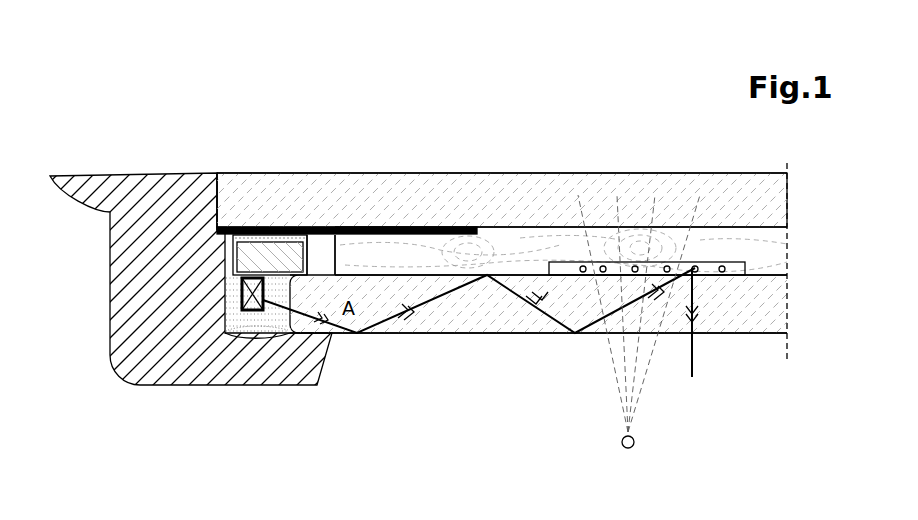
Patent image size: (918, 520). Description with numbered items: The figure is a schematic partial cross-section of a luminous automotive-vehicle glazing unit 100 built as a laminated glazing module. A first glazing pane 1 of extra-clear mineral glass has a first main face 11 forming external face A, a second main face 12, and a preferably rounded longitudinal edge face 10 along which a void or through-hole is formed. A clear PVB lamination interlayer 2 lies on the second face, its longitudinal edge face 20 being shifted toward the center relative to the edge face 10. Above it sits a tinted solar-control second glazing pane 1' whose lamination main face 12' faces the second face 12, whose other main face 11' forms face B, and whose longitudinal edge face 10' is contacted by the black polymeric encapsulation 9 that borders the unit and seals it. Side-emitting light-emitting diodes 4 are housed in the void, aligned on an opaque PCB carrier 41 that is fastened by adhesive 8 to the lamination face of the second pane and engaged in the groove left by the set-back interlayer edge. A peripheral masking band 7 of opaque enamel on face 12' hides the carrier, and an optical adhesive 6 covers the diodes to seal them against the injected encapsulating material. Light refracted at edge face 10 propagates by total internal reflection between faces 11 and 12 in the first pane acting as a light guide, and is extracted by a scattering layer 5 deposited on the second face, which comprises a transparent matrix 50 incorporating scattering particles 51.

The luminous automotive-vehicle glazing unit 100 is at (155, 110).
The first glazing pane 1 is at (791, 284).
The second glazing pane 1' is at (499, 200).
The lamination interlayer 2 is at (507, 263).
The light-emitting diodes 4 is at (240, 293).
The second glazing pane / scattering layer 5 is at (565, 262).
The optical adhesive 6 is at (247, 333).
The peripheral masking band 7 is at (405, 227).
The adhesive 8 is at (255, 227).
The polymeric encapsulation 9 is at (128, 256).
The edge face 10 is at (262, 355).
The edge face 10' is at (183, 185).
The first main face 11 is at (538, 378).
The main face 11' is at (502, 138).
The second main face 12 is at (537, 304).
The lamination main face 12' is at (632, 179).
The edge face 20 is at (328, 250).
The PCB carrier 41 is at (282, 260).
The transparent matrix 50 is at (603, 266).
The scattering particles 51 is at (722, 266).